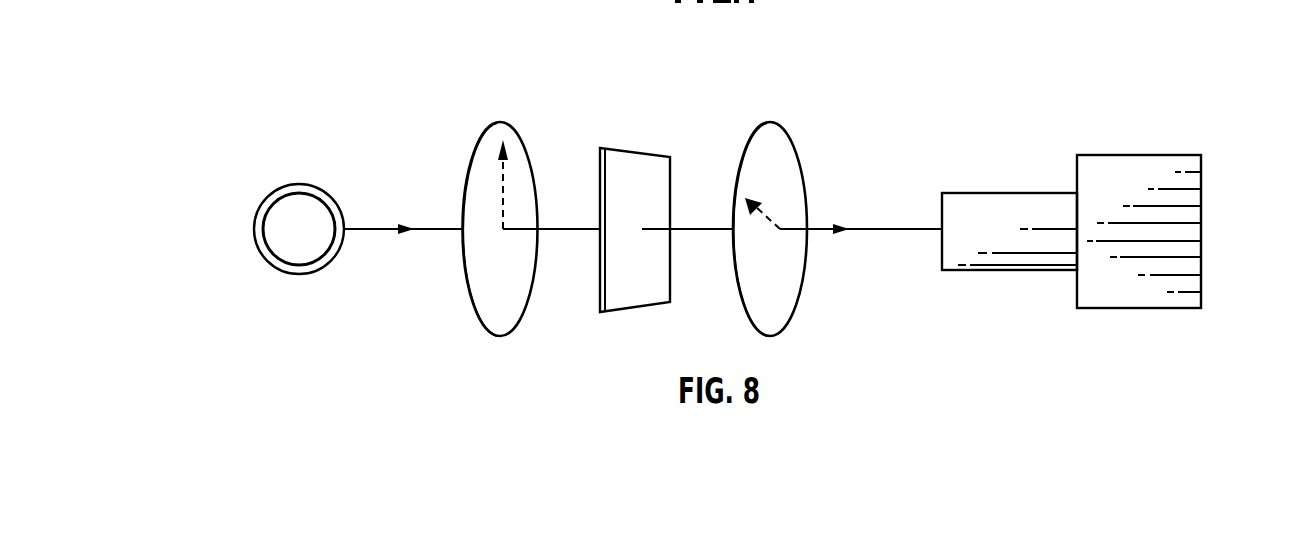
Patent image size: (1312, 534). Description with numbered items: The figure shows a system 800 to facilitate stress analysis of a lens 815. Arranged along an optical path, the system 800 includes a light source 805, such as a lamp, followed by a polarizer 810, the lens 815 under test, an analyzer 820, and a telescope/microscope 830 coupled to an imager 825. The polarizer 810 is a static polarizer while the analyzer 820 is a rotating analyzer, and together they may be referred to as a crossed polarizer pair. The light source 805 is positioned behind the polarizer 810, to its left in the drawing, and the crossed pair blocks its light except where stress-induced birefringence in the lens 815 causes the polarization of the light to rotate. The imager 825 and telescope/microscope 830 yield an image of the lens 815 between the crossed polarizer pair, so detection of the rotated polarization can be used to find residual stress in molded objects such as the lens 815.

The system 800 is at (256, 40).
The light source 805 is at (280, 193).
The polarizer 810 is at (478, 155).
The lens 815 is at (630, 150).
The analyzer 820 is at (803, 172).
The imager 825 is at (1201, 180).
The telescope/microscope 830 is at (1010, 193).